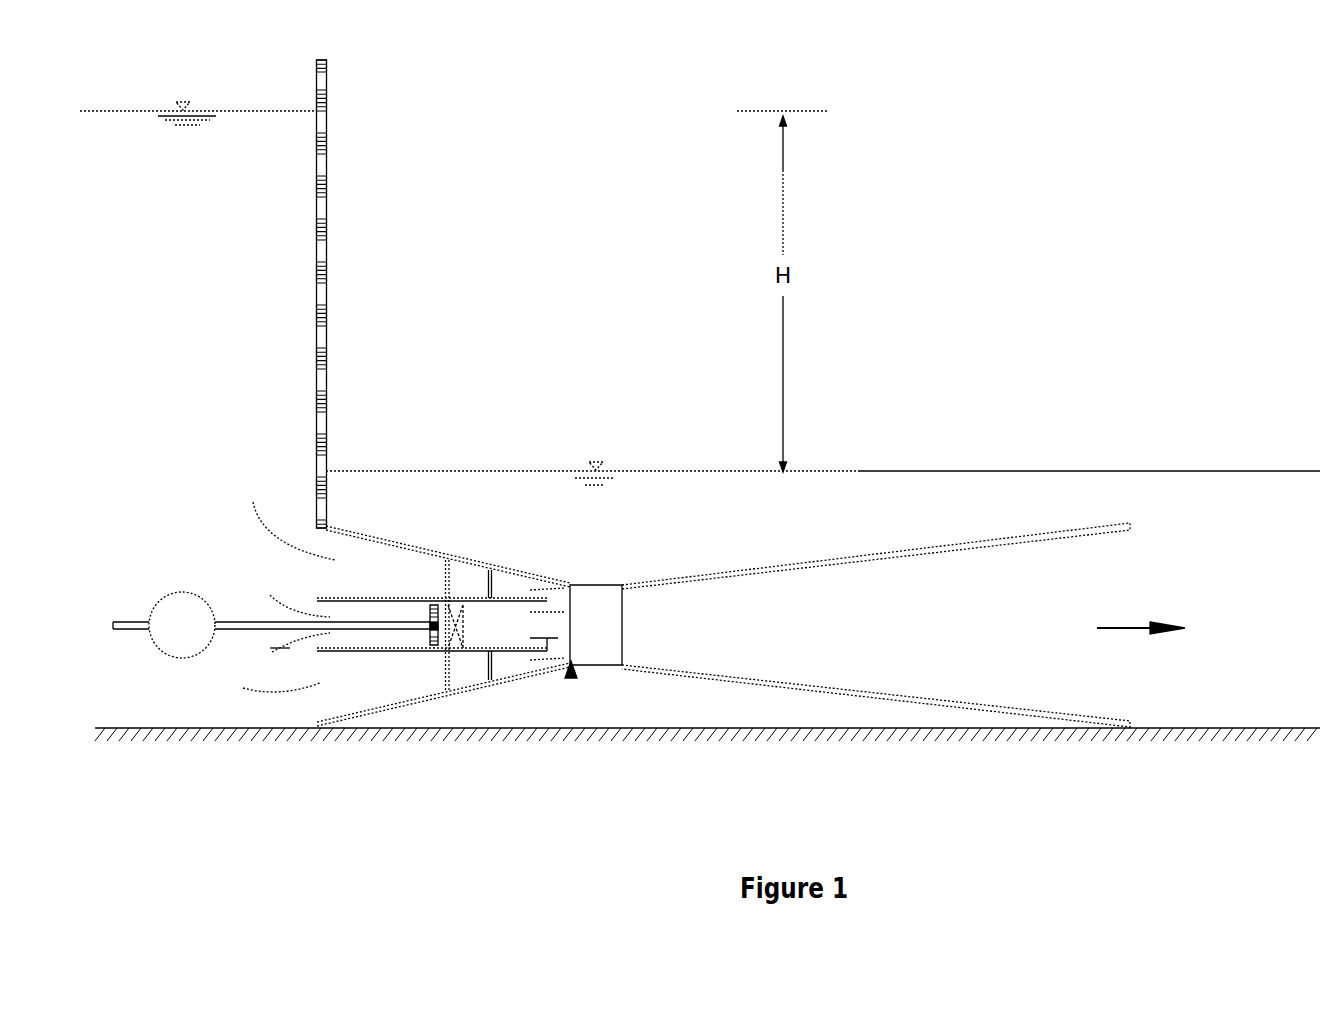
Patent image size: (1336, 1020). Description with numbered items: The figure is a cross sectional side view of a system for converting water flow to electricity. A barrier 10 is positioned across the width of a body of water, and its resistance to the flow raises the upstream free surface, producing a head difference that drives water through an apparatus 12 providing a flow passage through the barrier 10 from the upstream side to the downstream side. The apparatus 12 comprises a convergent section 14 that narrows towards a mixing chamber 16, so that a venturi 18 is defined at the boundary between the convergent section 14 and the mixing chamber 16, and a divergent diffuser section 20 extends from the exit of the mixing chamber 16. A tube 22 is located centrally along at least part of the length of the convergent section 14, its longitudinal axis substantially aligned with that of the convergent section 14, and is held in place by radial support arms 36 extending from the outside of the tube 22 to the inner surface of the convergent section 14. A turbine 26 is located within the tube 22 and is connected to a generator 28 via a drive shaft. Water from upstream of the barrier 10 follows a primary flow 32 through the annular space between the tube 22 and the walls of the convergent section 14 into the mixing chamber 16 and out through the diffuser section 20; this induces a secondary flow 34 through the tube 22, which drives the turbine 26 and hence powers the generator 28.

The barrier 10 is at (326, 148).
The apparatus 12 is at (710, 517).
The convergent section 14 is at (375, 707).
The mixing chamber 16 is at (605, 650).
The venturi 18 is at (571, 676).
The divergent diffuser section 20 is at (928, 545).
The tube 22 is at (397, 652).
The turbine 26 is at (447, 558).
The generator 28 is at (182, 658).
The primary flow 32 is at (552, 585).
The secondary flow 34 is at (547, 651).
The radial support arms 36 is at (458, 672).